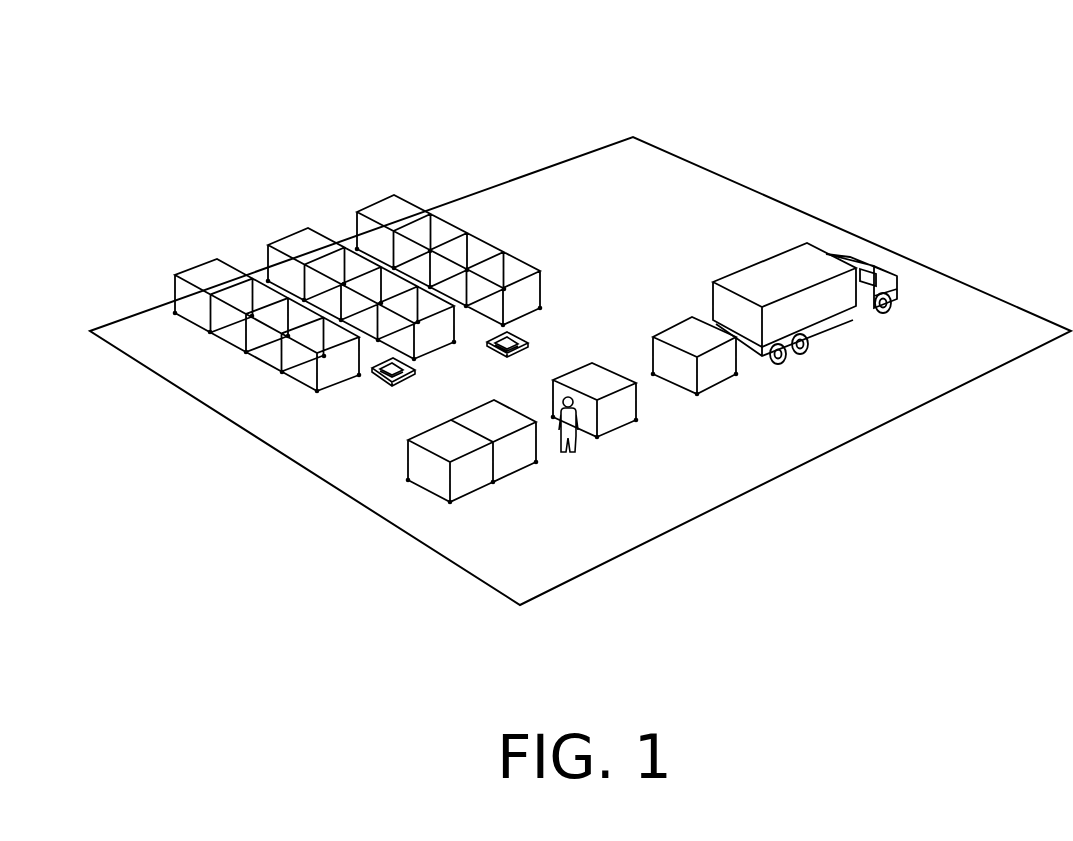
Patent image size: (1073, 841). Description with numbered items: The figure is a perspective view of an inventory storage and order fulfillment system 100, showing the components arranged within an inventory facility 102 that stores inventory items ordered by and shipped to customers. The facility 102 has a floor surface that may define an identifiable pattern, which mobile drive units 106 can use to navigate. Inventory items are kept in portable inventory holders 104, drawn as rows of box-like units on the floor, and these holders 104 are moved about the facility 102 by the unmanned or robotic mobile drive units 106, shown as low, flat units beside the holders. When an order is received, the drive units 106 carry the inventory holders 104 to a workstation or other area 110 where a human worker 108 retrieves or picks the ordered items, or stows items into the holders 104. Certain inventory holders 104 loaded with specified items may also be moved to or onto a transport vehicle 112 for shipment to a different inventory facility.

The inventory storage and order fulfillment system 100 is at (397, 85).
The inventory facility 102 is at (1013, 340).
The inventory holder 104 is at (440, 227).
The mobile drive unit 106 is at (488, 349).
The human worker 108 is at (567, 456).
The workstation 110 is at (549, 513).
The transport vehicle 112 is at (773, 265).